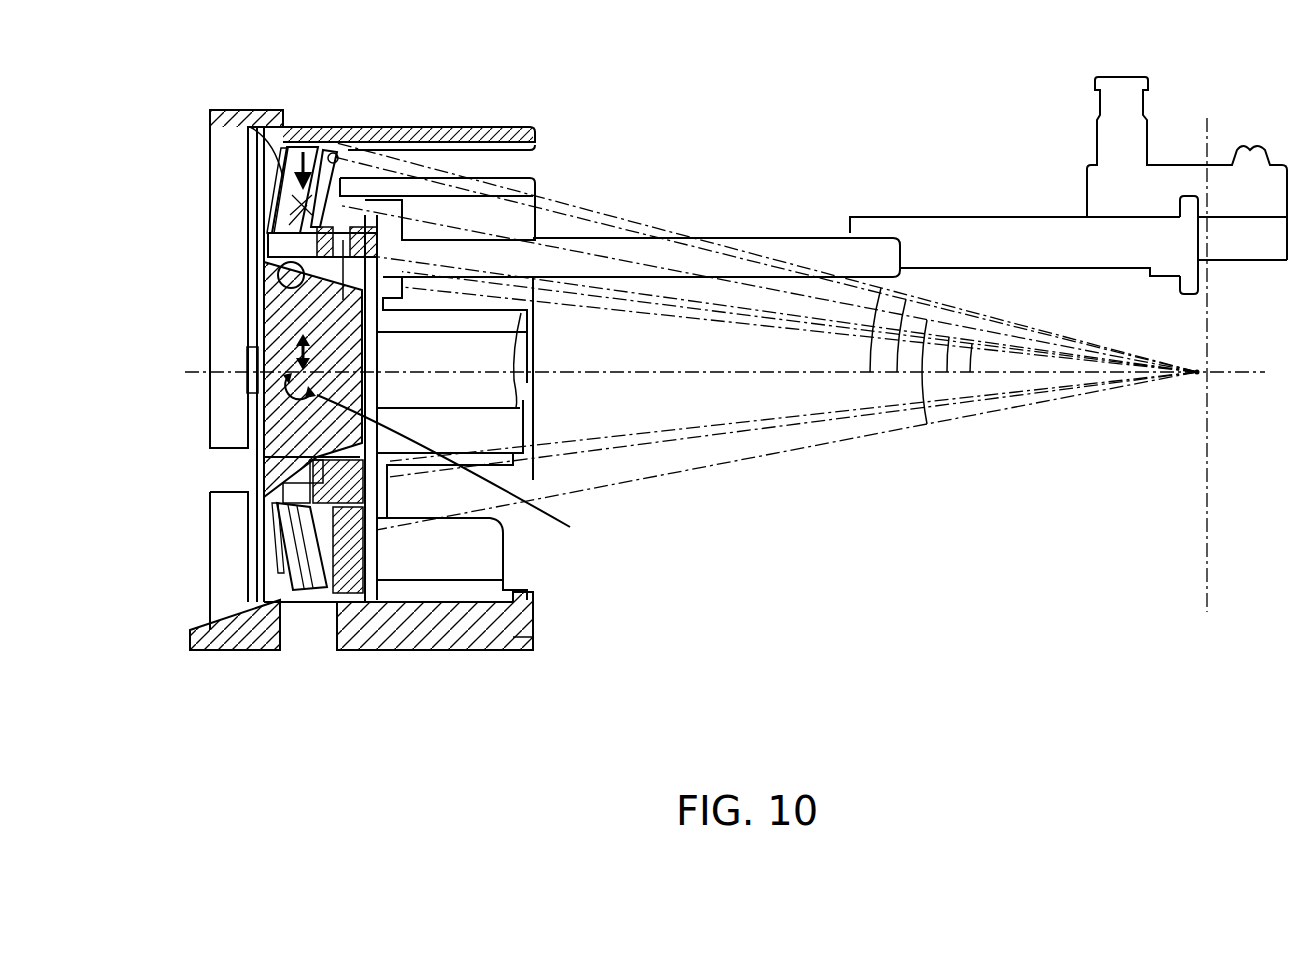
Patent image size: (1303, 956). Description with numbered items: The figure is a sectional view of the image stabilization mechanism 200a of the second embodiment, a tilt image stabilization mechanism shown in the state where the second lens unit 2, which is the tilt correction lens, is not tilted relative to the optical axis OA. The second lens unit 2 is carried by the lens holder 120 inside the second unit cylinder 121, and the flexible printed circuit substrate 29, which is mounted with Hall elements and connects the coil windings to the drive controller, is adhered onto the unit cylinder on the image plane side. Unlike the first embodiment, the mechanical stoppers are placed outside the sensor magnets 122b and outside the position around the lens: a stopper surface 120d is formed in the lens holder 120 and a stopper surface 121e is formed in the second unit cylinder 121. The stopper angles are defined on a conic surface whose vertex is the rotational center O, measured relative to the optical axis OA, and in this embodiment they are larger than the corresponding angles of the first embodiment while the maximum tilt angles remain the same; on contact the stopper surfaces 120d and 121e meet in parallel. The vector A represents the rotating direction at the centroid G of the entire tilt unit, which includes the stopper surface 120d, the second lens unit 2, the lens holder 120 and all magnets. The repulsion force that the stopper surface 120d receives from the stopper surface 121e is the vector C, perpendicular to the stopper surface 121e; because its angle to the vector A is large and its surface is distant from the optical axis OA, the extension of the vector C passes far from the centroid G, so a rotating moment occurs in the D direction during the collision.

The second lens unit 2 is at (263, 270).
The flexible printed circuit substrate (FPC) 29 is at (815, 218).
The lens holder 120 is at (270, 243).
The stopper surface 120d is at (303, 140).
The second unit cylinder 121 is at (458, 645).
The stopper surface 121e is at (318, 147).
The sensor magnets 122b is at (283, 183).
The image stabilization mechanism 200a is at (1280, 78).
The vector A is at (290, 347).
The repulsion force vector C is at (240, 118).
The rotating moment direction D is at (454, 470).
The centroid G is at (263, 413).
The rotational center O is at (1216, 388).
The optical axis OA is at (692, 370).